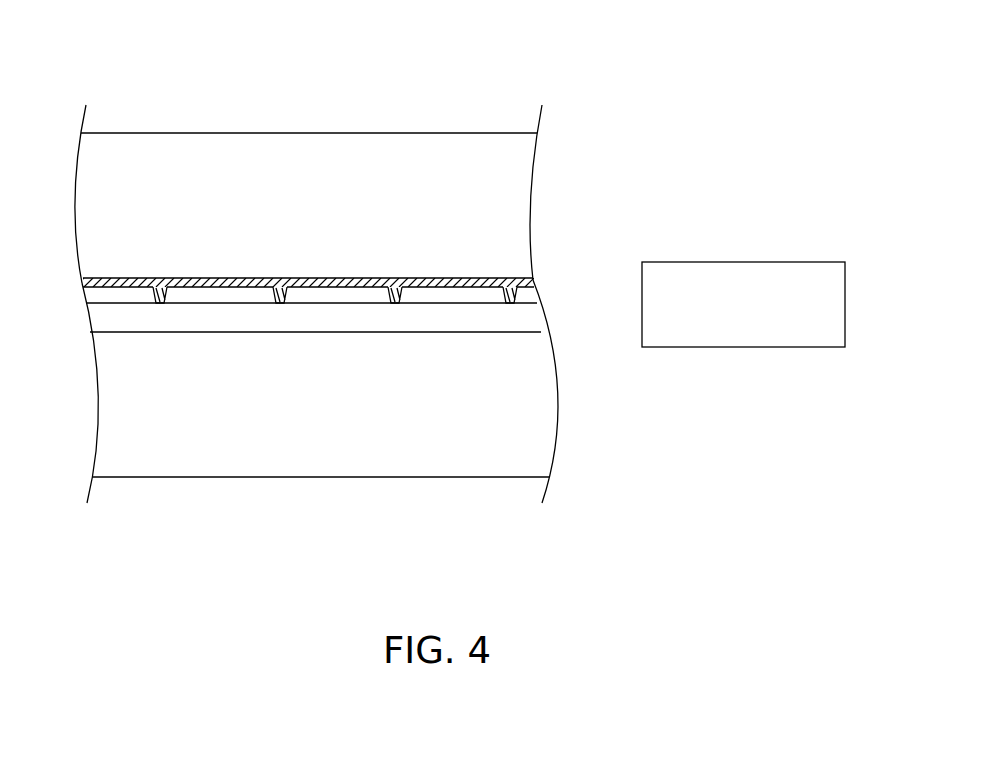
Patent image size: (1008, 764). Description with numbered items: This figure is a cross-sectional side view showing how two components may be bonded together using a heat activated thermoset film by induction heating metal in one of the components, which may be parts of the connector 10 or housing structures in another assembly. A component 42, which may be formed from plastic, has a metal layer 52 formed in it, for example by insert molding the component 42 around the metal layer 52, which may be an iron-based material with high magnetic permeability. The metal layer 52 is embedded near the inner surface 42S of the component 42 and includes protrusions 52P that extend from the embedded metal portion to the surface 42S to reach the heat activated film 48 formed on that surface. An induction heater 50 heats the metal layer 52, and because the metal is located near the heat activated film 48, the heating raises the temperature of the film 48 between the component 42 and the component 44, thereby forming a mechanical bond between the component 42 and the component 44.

The connector 10 is at (447, 62).
The component 42 is at (517, 190).
The surface of component 42S is at (455, 305).
The component 44 is at (540, 412).
The heat activated film 48 is at (172, 320).
The induction heater 50 is at (818, 335).
The metal layer 52 is at (92, 282).
The protrusions 52P is at (285, 290).